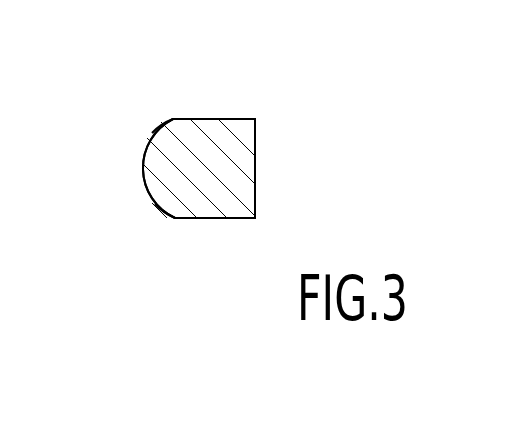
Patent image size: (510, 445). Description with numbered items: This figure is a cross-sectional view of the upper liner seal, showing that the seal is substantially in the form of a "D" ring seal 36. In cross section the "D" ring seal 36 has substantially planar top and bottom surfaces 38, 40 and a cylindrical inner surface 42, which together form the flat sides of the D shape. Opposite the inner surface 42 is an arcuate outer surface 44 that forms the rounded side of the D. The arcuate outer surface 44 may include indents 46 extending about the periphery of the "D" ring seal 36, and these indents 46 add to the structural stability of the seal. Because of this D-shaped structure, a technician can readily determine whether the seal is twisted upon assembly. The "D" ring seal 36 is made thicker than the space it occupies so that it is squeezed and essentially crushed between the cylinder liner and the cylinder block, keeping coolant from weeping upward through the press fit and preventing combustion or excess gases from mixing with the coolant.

The "D" ring seal 36 is at (235, 153).
The top surface 38 is at (217, 119).
The bottom surface 40 is at (212, 219).
The inner surface 42 is at (255, 176).
The outer surface 44 is at (143, 167).
The indents 46 is at (174, 121).